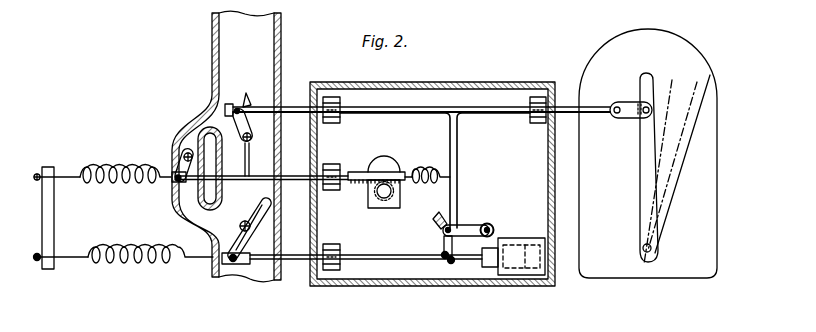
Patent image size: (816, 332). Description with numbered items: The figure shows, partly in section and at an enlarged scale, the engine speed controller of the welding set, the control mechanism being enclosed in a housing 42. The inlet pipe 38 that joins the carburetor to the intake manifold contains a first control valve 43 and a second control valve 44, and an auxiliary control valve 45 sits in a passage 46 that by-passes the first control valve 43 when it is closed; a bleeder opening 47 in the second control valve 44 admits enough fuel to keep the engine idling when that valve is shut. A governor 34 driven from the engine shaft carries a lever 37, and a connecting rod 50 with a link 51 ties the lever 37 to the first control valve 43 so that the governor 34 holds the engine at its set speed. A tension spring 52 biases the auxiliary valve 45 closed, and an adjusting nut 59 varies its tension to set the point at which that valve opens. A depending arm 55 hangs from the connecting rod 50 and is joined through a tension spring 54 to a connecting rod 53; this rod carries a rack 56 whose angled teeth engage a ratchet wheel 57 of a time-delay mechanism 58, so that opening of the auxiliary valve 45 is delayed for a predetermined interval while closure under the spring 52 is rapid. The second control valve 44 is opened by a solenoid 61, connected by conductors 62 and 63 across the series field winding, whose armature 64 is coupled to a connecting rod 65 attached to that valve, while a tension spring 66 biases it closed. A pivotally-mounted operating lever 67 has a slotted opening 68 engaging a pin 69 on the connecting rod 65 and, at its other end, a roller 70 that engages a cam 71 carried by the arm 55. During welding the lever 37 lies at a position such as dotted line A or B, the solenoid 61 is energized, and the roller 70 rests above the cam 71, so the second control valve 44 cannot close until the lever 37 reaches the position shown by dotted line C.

The governor 34 is at (692, 37).
The lever 37 is at (642, 72).
The inlet pipe 38 is at (282, 42).
The gearbox 42 is at (452, 76).
The first control valve 43 is at (250, 119).
The second control valve 44 is at (261, 206).
The auxiliary control valve 45 is at (190, 146).
The passage 46 is at (181, 193).
The bleeder opening 47 is at (258, 214).
The connecting rod 50 is at (436, 110).
The link 51 is at (633, 122).
The tension spring 52 is at (113, 165).
The connecting rod 53 is at (291, 153).
The tension spring 54 is at (436, 171).
The depending arm 55 is at (458, 152).
The rack 56 is at (359, 172).
The ratchet wheel 57 is at (401, 195).
The time-delay mechanism 58 is at (387, 156).
The adjusting nut 59 is at (38, 181).
The solenoid 61 is at (526, 238).
The conductor 62 is at (510, 277).
The conductor 63 is at (538, 276).
The armature 64 is at (491, 268).
The connecting rod 65 is at (374, 254).
The tension spring 66 is at (131, 250).
The operating lever 67 is at (454, 247).
The slotted opening 68 is at (452, 262).
The pin 69 is at (442, 259).
The roller 70 is at (491, 225).
The cam 71 is at (462, 225).
The dotted line A is at (672, 79).
The dotted line B is at (698, 84).
The dotted line C is at (712, 103).